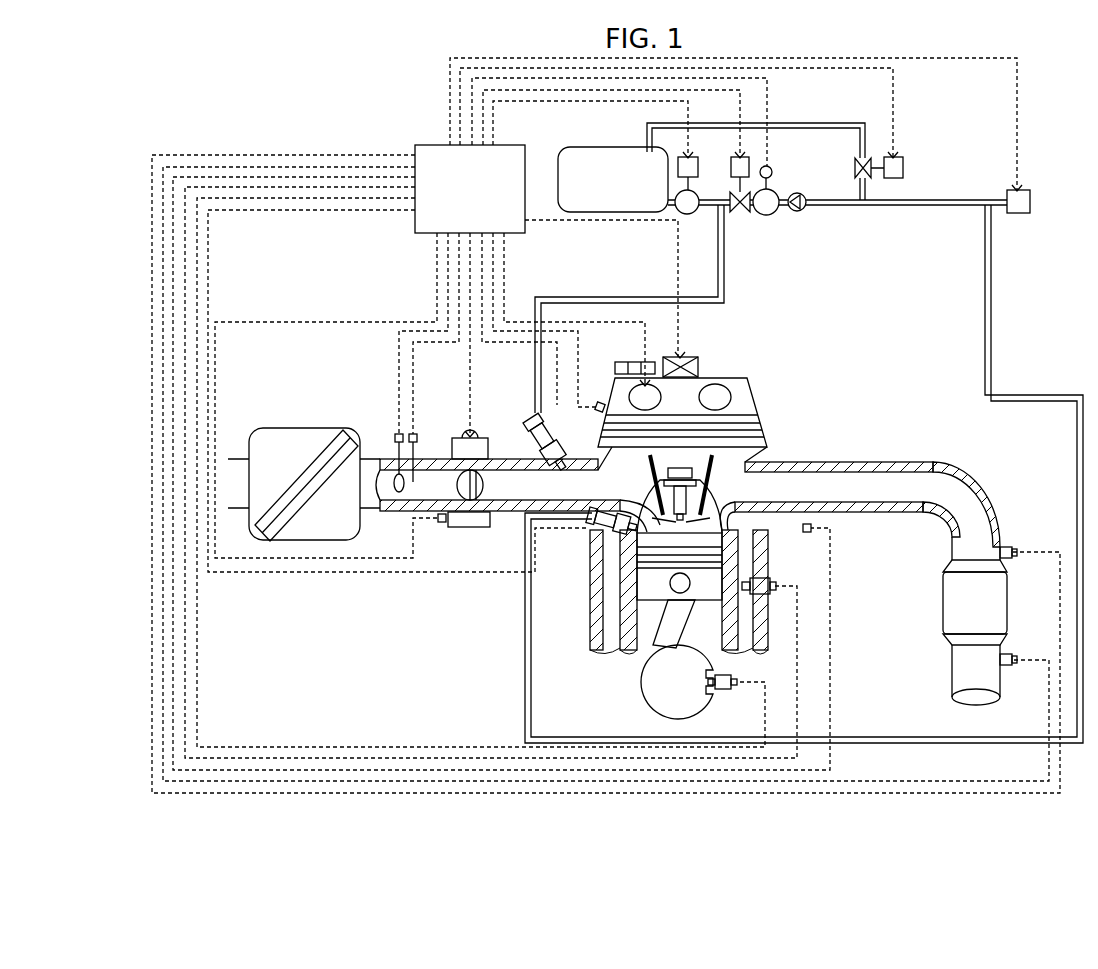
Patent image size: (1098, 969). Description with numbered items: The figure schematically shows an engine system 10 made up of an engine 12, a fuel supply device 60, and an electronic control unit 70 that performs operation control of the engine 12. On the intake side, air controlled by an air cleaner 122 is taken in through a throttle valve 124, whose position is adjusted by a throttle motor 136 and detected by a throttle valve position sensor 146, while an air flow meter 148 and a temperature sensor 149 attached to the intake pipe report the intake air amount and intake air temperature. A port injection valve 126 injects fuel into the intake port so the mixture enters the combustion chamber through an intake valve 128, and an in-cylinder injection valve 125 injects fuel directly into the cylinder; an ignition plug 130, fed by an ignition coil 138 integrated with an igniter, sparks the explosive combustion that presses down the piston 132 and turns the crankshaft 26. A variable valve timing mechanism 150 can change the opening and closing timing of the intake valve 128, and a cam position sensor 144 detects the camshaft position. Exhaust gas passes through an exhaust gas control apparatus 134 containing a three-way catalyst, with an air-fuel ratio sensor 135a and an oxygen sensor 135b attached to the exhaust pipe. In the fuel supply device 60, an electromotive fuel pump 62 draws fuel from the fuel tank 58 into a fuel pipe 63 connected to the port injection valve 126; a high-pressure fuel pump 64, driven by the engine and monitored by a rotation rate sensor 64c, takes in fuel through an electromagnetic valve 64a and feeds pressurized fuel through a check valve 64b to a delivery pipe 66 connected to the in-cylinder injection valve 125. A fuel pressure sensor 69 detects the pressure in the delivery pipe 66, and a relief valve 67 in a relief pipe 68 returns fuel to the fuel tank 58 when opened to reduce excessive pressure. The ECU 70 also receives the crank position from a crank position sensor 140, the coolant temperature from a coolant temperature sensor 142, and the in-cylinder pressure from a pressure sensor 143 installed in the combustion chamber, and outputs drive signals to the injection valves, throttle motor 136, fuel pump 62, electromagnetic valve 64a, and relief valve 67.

The engine system 10 is at (190, 114).
The engine 12 is at (806, 346).
The crankshaft 26 is at (648, 682).
The fuel tank 58 is at (605, 147).
The fuel supply device 60 is at (1040, 102).
The fuel pump 62 is at (690, 214).
The fuel pipe 63 is at (703, 173).
The high-pressure fuel pump 64 is at (771, 214).
The electromagnetic valve 64a is at (740, 214).
The check valve 64b is at (805, 196).
The rotation rate sensor 64c is at (773, 170).
The delivery pipe 66 is at (968, 198).
The relief valve 67 is at (906, 170).
The relief pipe 68 is at (795, 123).
The fuel pressure sensor 69 is at (1022, 190).
The electronic control unit 70 is at (497, 145).
The air cleaner 122 is at (308, 428).
The throttle valve 124 is at (489, 455).
The in-cylinder injection valve 125 is at (594, 540).
The port injection valve 126 is at (537, 415).
The intake valve 128 is at (645, 505).
The ignition plug 130 is at (730, 503).
The piston 132 is at (640, 576).
The exhaust gas control apparatus 134 is at (943, 600).
The air-fuel ratio sensor 135a is at (1012, 547).
The oxygen sensor 135b is at (1008, 668).
The throttle motor 136 is at (465, 433).
The ignition coil 138 is at (695, 357).
The crank position sensor 140 is at (724, 690).
The coolant temperature sensor 142 is at (772, 580).
The pressure sensor 143 is at (812, 528).
The cam position sensor 144 is at (602, 403).
The throttle valve position sensor 146 is at (470, 527).
The air flow meter 148 is at (394, 437).
The temperature sensor 149 is at (414, 437).
The variable valve timing mechanism 150 is at (785, 408).